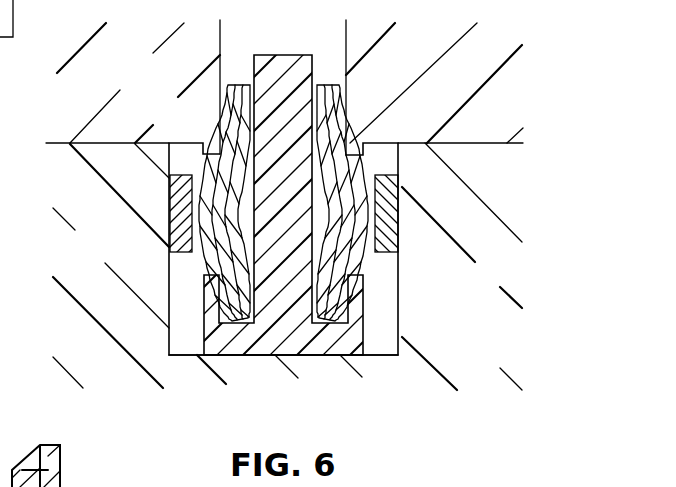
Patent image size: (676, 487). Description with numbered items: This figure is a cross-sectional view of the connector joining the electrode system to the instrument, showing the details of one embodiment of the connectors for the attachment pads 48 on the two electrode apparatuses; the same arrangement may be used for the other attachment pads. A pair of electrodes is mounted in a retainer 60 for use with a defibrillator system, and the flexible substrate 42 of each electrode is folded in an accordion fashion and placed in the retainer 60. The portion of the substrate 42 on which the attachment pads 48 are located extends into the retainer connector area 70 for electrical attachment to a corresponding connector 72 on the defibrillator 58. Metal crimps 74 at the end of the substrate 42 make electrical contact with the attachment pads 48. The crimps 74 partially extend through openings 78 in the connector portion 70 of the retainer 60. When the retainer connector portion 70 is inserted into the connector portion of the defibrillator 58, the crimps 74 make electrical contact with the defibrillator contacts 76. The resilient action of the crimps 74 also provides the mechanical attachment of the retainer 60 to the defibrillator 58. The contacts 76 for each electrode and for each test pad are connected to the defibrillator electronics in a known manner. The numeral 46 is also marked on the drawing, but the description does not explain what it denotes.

The flexible substrate 42 is at (243, 88).
The left flexible seal member 46 is at (243, 126).
The attachment pad 48 is at (348, 173).
The defibrillator 58 is at (101, 262).
The retainer 60 is at (153, 82).
The retainer connector area 70 is at (372, 331).
The connector 72 is at (332, 373).
The metal crimp 74 is at (346, 257).
The defibrillator contact 76 is at (183, 194).
The opening 78 is at (204, 275).